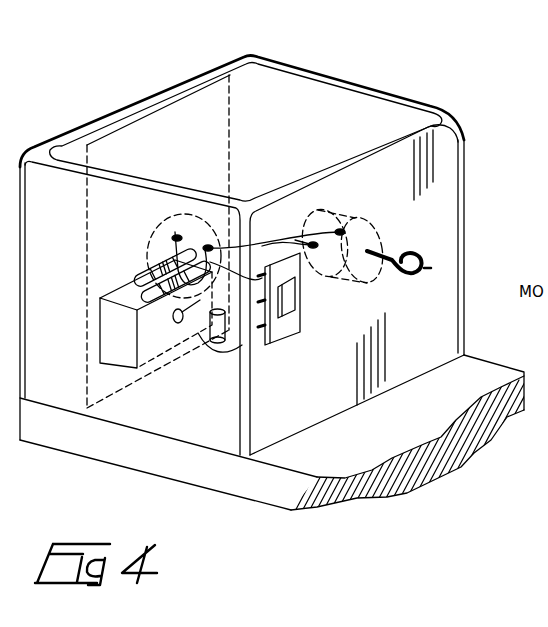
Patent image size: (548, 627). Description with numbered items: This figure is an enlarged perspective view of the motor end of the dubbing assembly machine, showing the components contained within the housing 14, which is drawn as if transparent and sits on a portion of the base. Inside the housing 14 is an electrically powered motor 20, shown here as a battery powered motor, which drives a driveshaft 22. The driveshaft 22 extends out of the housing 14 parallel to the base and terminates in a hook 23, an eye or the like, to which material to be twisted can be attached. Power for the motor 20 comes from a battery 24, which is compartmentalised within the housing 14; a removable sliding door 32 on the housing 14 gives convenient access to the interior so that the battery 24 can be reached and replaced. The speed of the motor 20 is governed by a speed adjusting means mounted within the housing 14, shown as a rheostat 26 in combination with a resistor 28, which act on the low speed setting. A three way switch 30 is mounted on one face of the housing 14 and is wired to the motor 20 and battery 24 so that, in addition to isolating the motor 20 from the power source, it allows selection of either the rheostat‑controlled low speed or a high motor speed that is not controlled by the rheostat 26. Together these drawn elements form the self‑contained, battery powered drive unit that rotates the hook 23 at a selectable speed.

The housing 14 is at (331, 103).
The motor 20 is at (335, 218).
The driveshaft 22 is at (403, 246).
The hook 23 is at (406, 252).
The battery 24 is at (127, 328).
The rheostat 26 is at (183, 227).
The resistor 28 is at (213, 342).
The three way switch 30 is at (288, 300).
The removable sliding door 32 is at (198, 110).